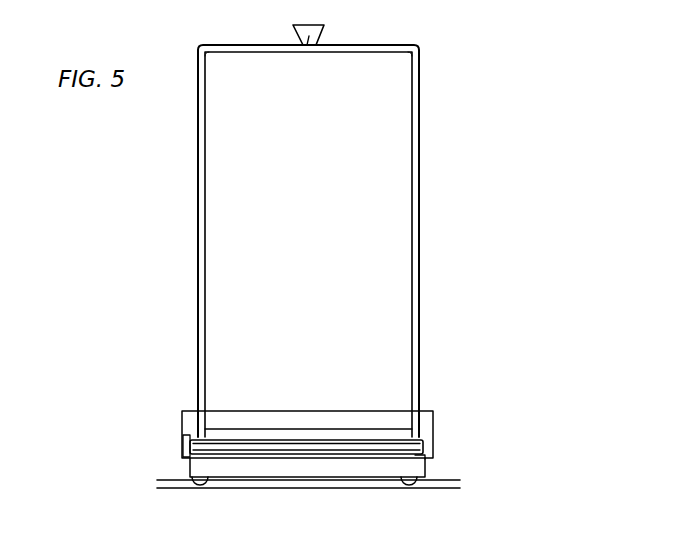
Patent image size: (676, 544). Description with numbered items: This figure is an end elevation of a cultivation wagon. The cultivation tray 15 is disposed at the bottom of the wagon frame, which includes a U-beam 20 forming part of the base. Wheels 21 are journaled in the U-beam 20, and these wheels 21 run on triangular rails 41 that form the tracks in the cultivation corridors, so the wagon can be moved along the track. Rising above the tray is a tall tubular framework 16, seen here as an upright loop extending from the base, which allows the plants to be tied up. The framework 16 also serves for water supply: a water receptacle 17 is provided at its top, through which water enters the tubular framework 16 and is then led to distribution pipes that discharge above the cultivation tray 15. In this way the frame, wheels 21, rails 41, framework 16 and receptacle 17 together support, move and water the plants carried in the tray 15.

The cultivation tray 15 is at (304, 412).
The tubular framework 16 is at (419, 197).
The water receptacle 17 is at (316, 33).
The U-beam 20 is at (284, 465).
The wheels 21 is at (205, 481).
The triangular rails 41 is at (442, 489).